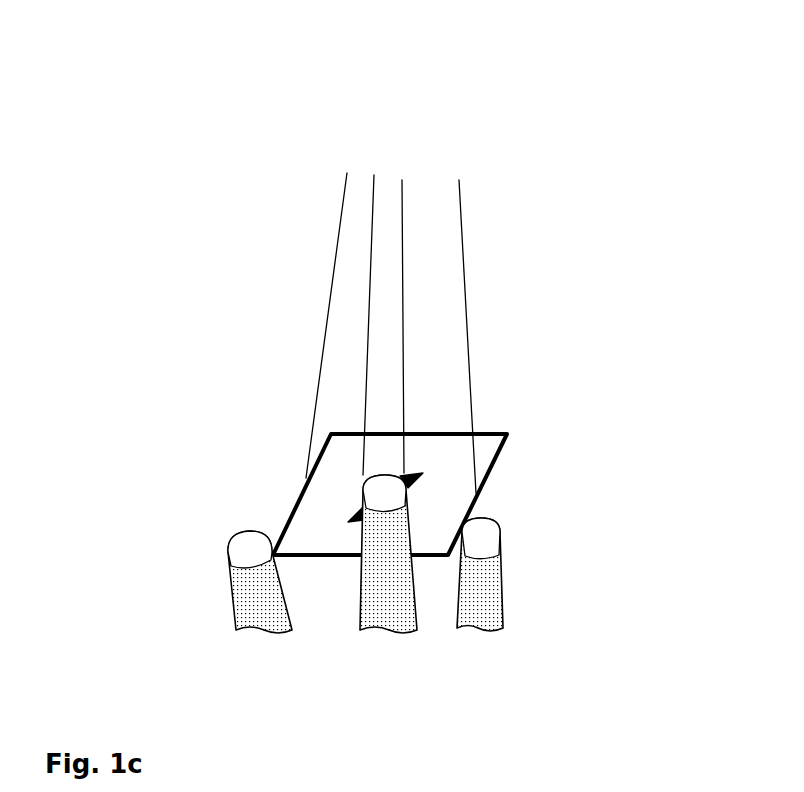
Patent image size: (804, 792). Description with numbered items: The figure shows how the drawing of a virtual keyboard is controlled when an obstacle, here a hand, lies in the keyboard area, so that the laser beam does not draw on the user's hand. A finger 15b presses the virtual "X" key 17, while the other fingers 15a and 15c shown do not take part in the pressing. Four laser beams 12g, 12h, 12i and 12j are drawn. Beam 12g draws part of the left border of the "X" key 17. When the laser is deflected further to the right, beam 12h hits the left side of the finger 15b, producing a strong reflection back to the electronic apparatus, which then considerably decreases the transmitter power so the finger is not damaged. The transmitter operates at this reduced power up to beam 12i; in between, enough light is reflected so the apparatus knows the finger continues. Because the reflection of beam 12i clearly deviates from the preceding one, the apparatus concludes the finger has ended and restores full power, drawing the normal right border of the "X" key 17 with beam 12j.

The laser beam 12g is at (340, 217).
The laser beam 12h is at (373, 180).
The laser beam 12i is at (402, 180).
The laser beam 12j is at (460, 230).
The "X" key 17 is at (497, 430).
The finger 15a is at (255, 607).
The finger 15b is at (378, 602).
The finger 15c is at (478, 605).